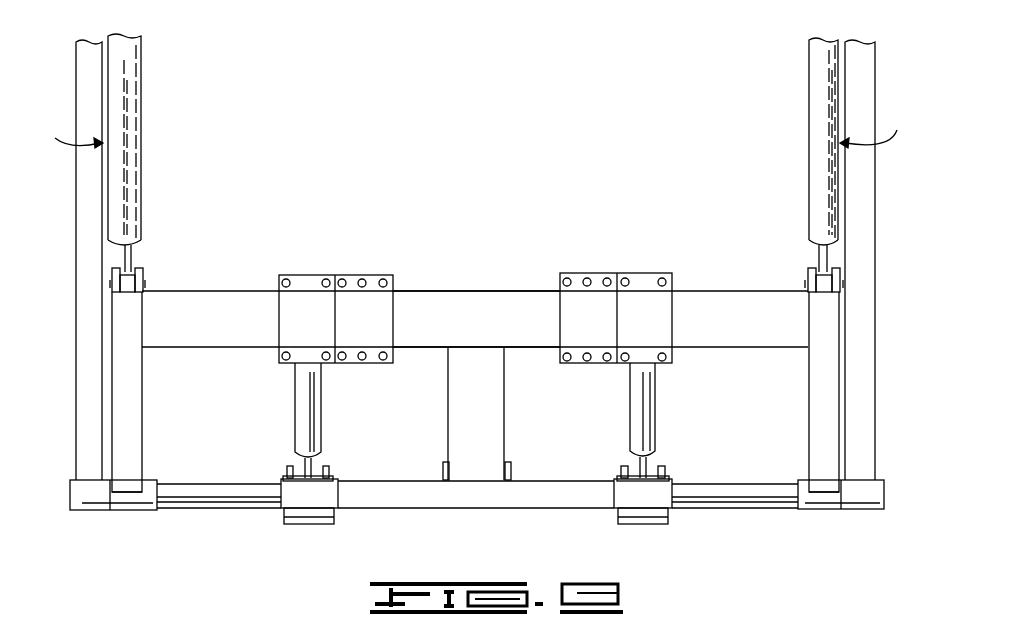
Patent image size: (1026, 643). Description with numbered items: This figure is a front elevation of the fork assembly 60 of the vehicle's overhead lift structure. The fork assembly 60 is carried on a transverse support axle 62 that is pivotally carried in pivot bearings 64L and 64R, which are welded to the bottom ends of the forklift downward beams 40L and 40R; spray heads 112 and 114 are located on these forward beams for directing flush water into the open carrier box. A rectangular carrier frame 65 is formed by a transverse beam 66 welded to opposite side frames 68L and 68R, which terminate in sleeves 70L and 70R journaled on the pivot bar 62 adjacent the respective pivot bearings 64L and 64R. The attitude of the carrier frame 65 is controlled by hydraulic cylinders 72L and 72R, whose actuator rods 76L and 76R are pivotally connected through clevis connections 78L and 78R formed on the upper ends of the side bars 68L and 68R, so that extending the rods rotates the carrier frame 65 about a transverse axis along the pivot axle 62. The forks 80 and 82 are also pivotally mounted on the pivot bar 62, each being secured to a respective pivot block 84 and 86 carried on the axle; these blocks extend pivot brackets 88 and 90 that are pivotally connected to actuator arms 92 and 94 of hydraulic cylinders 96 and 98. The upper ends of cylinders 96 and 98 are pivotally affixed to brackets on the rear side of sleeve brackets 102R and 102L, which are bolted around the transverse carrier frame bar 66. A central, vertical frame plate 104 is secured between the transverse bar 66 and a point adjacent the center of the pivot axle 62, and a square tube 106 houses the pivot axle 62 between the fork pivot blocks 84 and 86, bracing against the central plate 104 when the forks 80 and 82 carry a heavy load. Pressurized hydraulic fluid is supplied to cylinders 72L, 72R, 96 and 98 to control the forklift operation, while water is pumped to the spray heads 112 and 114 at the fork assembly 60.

The forklift downward beam 40R is at (83, 275).
The forklift downward beam 40L is at (865, 298).
The spray head 112 is at (67, 131).
The spray head 114 is at (877, 128).
The hydraulic cylinder 72R is at (136, 90).
The hydraulic cylinder 72L is at (818, 72).
The hydraulic cylinder actuator rod 76R is at (137, 257).
The hydraulic cylinder actuator rod 76L is at (812, 253).
The clevis connection 78R is at (145, 288).
The clevis connection 78L is at (808, 290).
The side frame 68R is at (142, 392).
The side frame 68L is at (808, 402).
The transverse beam 66 is at (205, 308).
The carrier frame 65 is at (472, 303).
The sleeve bracket 102R is at (295, 300).
The sleeve bracket 102L is at (638, 305).
The central vertical frame plate 104 is at (450, 402).
The hydraulic cylinder 96 is at (295, 392).
The hydraulic cylinder 98 is at (655, 382).
The actuator arm 92 is at (305, 462).
The actuator arm 94 is at (640, 464).
The pivot bracket 88 is at (322, 467).
The pivot bracket 90 is at (658, 467).
The pivot block 84 is at (328, 502).
The pivot block 86 is at (627, 493).
The fork 80 is at (308, 525).
The fork 82 is at (640, 525).
The square tube 106 is at (533, 500).
The transverse support axle 62 is at (200, 507).
The pivot bearing 64R is at (93, 512).
The pivot bearing 64L is at (862, 512).
The sleeve 70R is at (123, 512).
The sleeve 70L is at (820, 513).
The fork assembly 60 is at (775, 542).